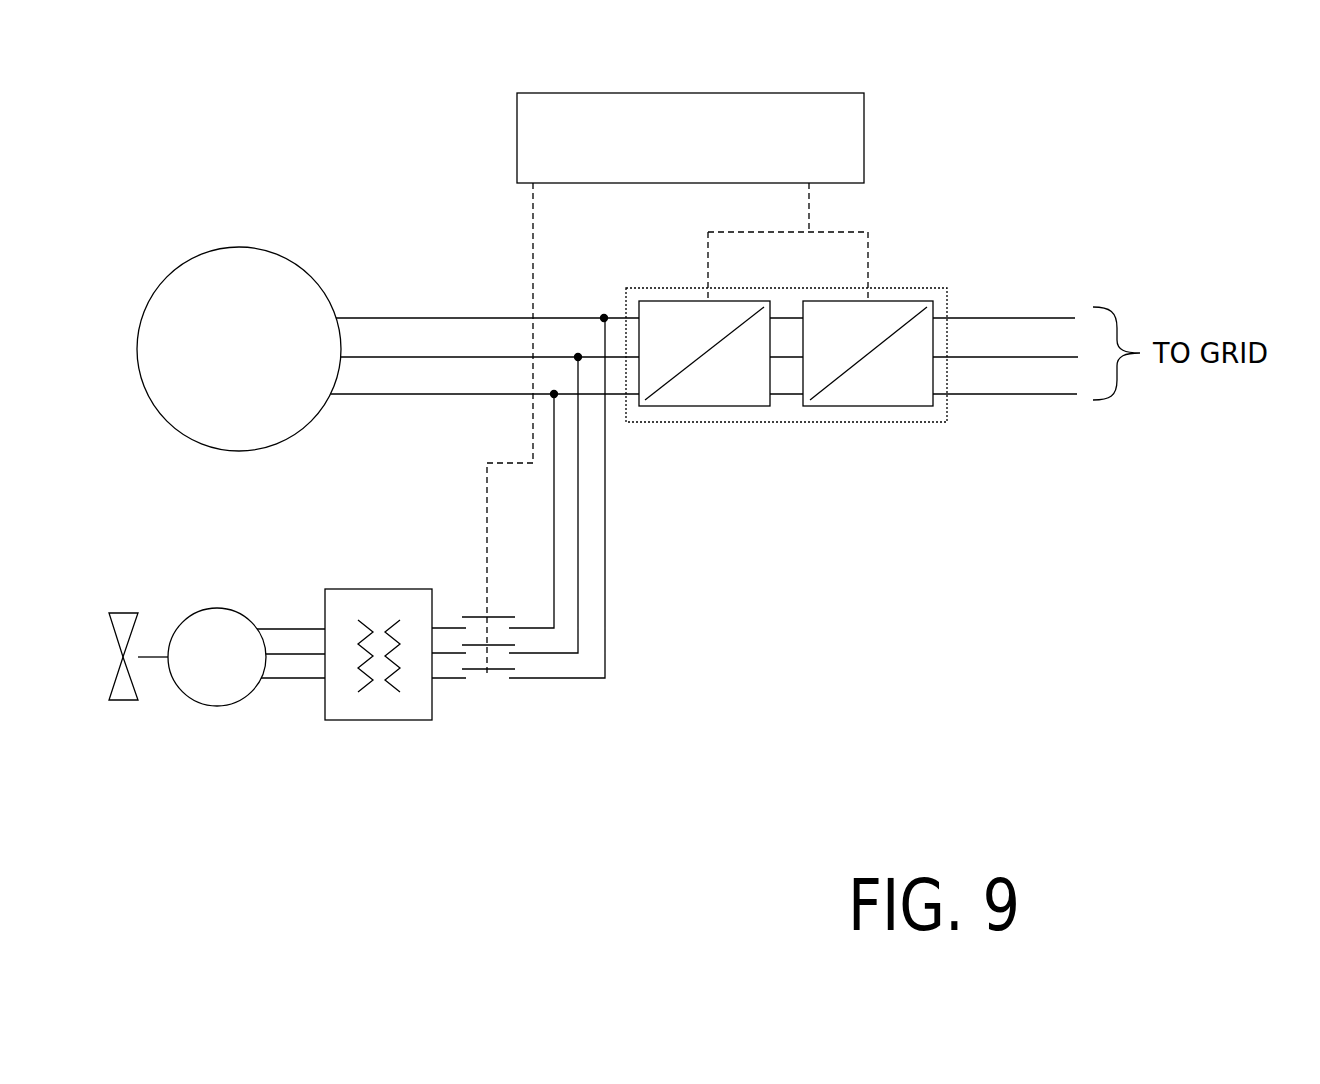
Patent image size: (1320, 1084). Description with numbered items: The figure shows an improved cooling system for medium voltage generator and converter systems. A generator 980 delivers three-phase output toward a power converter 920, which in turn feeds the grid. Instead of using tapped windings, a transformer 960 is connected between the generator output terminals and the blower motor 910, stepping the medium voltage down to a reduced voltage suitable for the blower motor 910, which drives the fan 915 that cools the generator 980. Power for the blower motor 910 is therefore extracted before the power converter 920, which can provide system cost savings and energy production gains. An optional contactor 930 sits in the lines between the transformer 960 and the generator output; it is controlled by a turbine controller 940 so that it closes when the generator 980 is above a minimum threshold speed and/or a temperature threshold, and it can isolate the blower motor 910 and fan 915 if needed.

The blower motor 910 is at (192, 673).
The fan 915 is at (123, 700).
The power converter 920 is at (928, 287).
The contactor 930 is at (494, 708).
The turbine controller 940 is at (664, 157).
The transformer 960 is at (397, 720).
The generator 980 is at (214, 368).